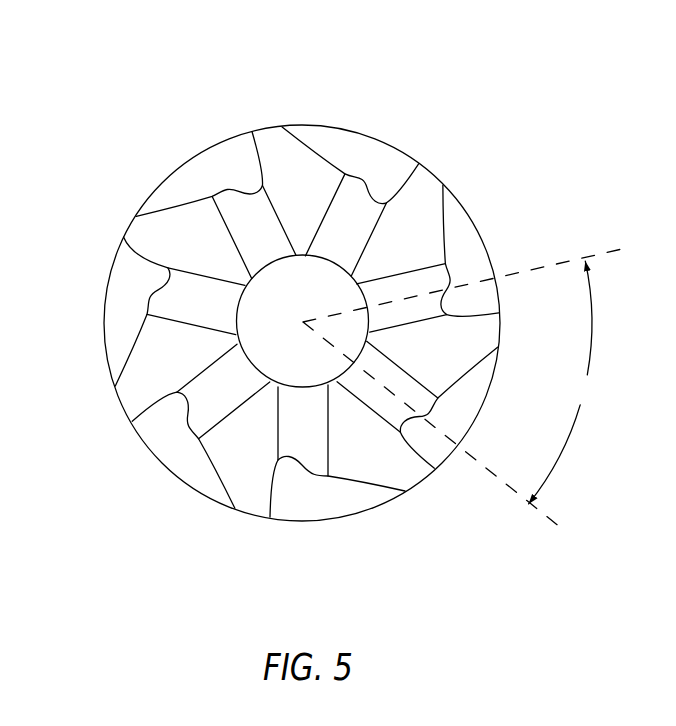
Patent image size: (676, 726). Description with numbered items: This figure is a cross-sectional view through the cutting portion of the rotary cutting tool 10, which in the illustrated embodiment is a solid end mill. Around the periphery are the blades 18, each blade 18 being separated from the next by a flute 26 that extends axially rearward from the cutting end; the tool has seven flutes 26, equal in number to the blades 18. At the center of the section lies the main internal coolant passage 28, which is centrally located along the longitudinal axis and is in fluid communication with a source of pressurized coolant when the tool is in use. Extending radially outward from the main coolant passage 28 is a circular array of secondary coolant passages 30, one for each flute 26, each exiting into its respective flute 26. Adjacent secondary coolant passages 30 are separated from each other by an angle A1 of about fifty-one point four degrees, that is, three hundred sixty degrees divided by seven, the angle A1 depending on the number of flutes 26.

The rotary cutting tool 10 is at (72, 88).
The blade 18 is at (263, 128).
The flute 26 is at (216, 141).
The main internal coolant passage 28 is at (280, 312).
The secondary coolant passage 30 is at (341, 231).
The angle A1 is at (462, 390).